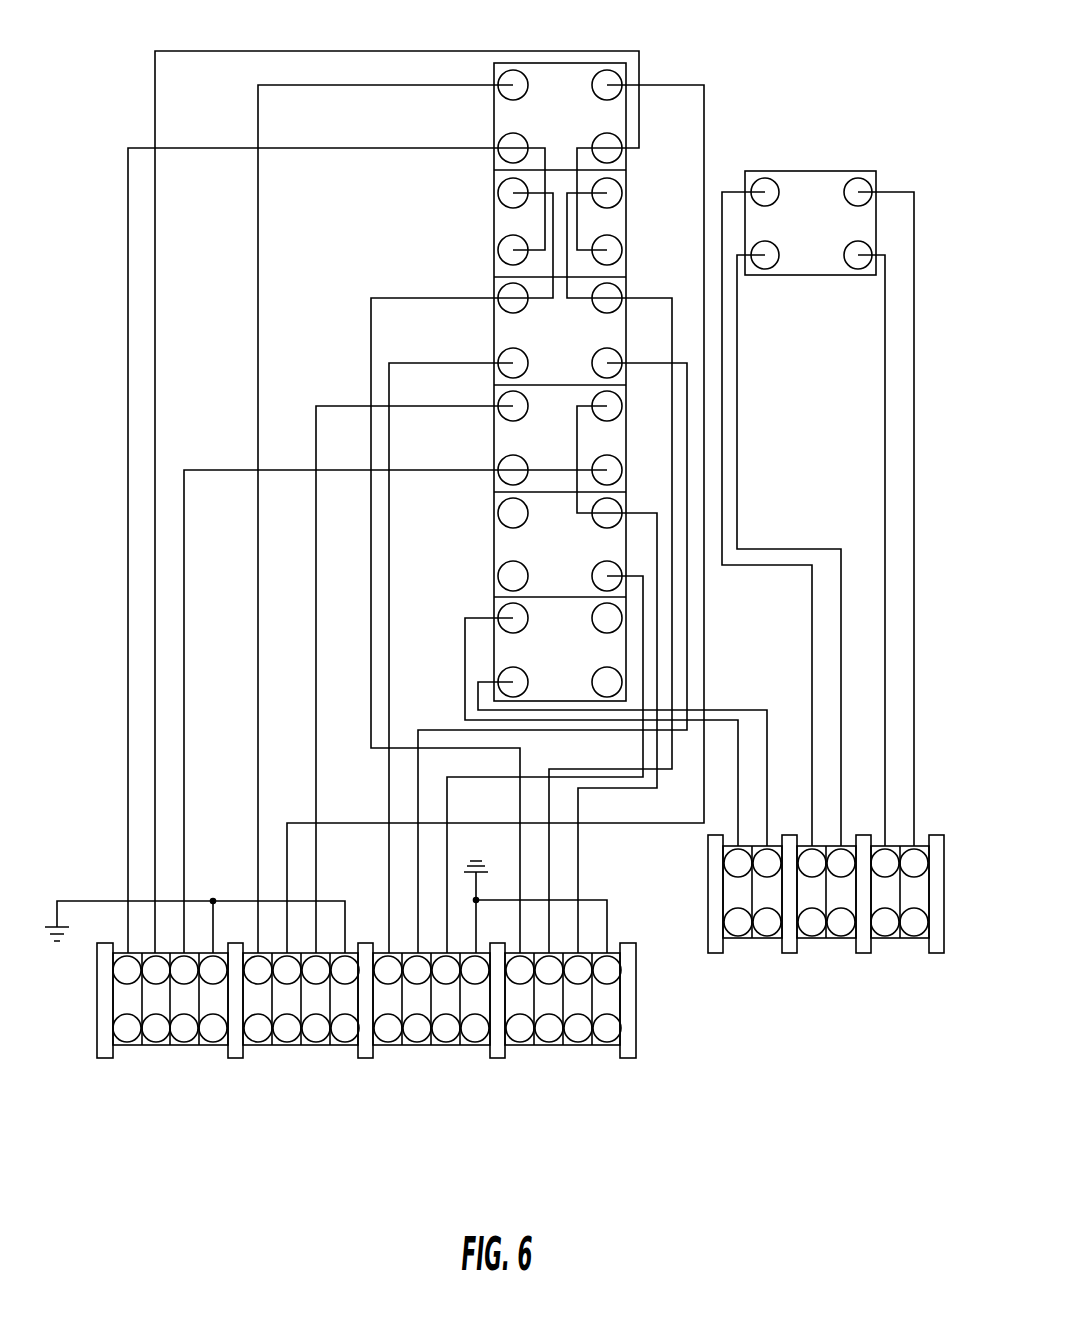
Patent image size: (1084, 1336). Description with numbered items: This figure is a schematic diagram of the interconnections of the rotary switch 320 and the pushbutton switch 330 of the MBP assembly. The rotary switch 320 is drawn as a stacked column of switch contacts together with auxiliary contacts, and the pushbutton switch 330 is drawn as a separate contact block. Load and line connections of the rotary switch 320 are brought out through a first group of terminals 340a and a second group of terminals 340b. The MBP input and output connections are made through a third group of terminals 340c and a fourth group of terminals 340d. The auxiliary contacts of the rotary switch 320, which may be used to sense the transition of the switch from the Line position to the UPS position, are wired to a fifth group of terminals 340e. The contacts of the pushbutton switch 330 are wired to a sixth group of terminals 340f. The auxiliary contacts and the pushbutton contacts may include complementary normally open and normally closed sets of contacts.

The rotary switch 320 is at (562, 63).
The pushbutton switch 330 is at (810, 170).
The first group of terminals 340a is at (147, 897).
The second group of terminals 340b is at (614, 946).
The third group of terminals 340c is at (256, 1080).
The fourth group of terminals 340d is at (467, 1068).
The fifth group of terminals 340e is at (762, 948).
The sixth group of terminals 340f is at (830, 947).